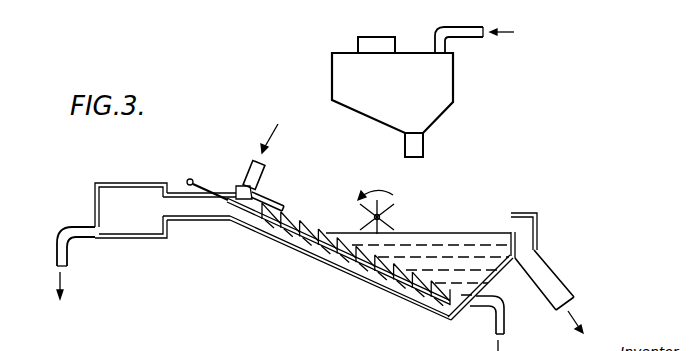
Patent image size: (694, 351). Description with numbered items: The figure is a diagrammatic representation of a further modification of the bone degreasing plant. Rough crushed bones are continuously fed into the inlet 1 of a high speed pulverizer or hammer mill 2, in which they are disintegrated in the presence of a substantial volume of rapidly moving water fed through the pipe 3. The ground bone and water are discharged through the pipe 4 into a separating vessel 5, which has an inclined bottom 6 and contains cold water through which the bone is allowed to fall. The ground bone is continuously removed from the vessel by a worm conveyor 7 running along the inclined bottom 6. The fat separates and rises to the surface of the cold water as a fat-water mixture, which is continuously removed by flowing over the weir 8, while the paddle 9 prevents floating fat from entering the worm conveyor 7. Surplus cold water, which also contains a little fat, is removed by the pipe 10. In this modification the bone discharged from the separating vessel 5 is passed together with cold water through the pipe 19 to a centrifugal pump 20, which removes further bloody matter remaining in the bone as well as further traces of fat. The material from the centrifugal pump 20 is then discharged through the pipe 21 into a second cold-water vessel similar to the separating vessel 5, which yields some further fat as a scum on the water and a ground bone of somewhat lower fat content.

The inlet 1 is at (362, 43).
The hammer mill 2 is at (449, 90).
The pipe 3 is at (472, 31).
The pipe 4 is at (418, 146).
The separating vessel 5 is at (475, 245).
The inclined bottom 6 is at (345, 271).
The worm conveyor 7 is at (312, 255).
The weir 8 is at (517, 241).
The paddle 9 is at (392, 214).
The pipe 10 is at (504, 313).
The pipe 19 is at (202, 222).
The centrifugal pump 20 is at (122, 240).
The pipe 21 is at (66, 226).